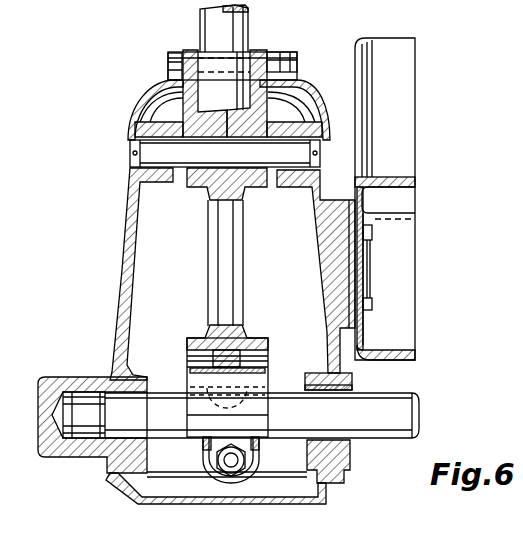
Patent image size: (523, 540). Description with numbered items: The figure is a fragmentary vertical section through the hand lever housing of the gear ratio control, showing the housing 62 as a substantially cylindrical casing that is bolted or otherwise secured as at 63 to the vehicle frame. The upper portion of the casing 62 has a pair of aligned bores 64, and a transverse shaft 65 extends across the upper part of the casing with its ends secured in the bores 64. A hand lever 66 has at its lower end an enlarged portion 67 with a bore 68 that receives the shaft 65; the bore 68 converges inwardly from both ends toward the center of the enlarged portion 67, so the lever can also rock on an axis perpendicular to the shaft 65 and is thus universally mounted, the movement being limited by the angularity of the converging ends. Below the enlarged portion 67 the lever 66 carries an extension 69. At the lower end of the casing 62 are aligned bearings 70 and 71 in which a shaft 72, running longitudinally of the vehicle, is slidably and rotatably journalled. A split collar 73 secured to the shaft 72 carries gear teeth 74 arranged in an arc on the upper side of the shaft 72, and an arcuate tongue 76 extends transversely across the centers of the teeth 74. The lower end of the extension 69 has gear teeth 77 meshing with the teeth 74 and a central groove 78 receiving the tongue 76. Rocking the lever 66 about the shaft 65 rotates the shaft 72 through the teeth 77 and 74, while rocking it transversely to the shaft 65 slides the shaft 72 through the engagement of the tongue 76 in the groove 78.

The housing 62 is at (48, 378).
The bolts 63 is at (372, 305).
The aligned bores 64 is at (130, 170).
The transverse shaft 65 is at (128, 131).
The hand lever 66 is at (200, 30).
The enlarged portion 67 is at (266, 178).
The bore 68 is at (188, 178).
The extension 69 is at (243, 272).
The bearing 70 is at (52, 395).
The bearing 71 is at (352, 388).
The shaft 72 is at (417, 400).
The split collar 73 is at (266, 441).
The gear teeth 74 is at (268, 360).
The arcuate tongue 76 is at (250, 340).
The gear teeth 77 is at (187, 361).
The central groove 78 is at (207, 335).